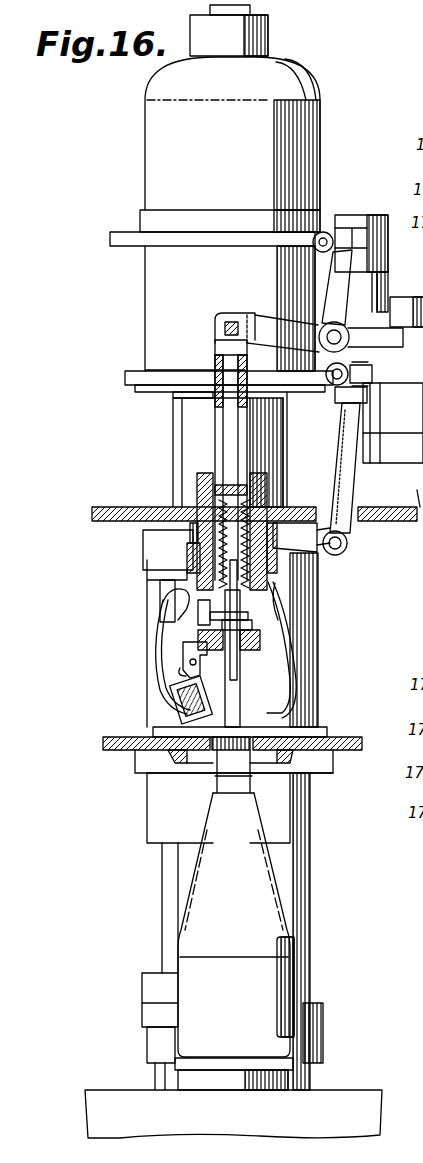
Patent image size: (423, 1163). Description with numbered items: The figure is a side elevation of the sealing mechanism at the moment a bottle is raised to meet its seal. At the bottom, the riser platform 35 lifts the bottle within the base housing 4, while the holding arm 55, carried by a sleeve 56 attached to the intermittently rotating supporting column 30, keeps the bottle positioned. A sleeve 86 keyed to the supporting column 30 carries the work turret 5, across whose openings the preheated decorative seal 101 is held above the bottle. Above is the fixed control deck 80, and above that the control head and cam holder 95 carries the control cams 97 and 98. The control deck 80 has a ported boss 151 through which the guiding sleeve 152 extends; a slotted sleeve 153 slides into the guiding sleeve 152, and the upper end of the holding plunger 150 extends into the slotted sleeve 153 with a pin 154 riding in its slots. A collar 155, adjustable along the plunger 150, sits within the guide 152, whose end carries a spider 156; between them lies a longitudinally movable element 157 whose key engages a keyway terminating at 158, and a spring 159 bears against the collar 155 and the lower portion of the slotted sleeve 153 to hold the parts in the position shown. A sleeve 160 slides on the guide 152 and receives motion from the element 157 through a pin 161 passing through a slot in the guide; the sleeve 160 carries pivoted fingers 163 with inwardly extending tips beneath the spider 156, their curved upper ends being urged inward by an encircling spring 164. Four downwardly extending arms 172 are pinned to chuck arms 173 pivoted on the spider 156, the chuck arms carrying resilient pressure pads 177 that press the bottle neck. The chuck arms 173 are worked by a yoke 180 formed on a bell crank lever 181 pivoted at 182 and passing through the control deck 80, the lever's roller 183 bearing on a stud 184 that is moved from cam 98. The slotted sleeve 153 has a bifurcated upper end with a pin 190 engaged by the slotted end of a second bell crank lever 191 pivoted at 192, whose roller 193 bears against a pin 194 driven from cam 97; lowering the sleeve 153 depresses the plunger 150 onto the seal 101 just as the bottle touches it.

The base housing 4 is at (76, 1122).
The work turret 5 is at (92, 747).
The supporting column 30 is at (167, 885).
The riser platform 35 is at (223, 1085).
The holding arm 55 is at (292, 960).
The sleeve 56 is at (155, 1047).
The control deck 80 is at (120, 510).
The sleeve 86 is at (154, 812).
The control head and cam holder 95 is at (153, 145).
The control cam 97 is at (122, 239).
The control cam 98 is at (128, 377).
The precut seal 101 is at (275, 733).
The holding plunger 150 is at (238, 692).
The ported boss 151 is at (198, 485).
The guiding sleeve 152 is at (258, 475).
The slotted sleeve 153 is at (217, 423).
The pin 154 is at (228, 478).
The collar 155 is at (282, 622).
The spider 156 is at (185, 652).
The longitudinally movable element 157 is at (275, 640).
The keyway termination 158 is at (236, 678).
The spring 159 is at (162, 588).
The sleeve 160 is at (196, 618).
The pin 161 is at (208, 628).
The pivoted fingers 163 is at (290, 686).
The encircling spring 164 is at (292, 598).
The downwardly extending arms 172 is at (168, 600).
The chuck arms 173 is at (165, 690).
The resilient pressure pads 177 is at (180, 706).
The yoke 180 is at (300, 522).
The bell crank lever 181 is at (346, 533).
The pivot 182 is at (342, 548).
The roller 183 is at (374, 374).
The stud 184 is at (333, 386).
The pin 190 is at (226, 328).
The bell crank lever 191 is at (267, 323).
The pivot 192 is at (342, 330).
The roller 193 is at (352, 240).
The pin 194 is at (326, 230).